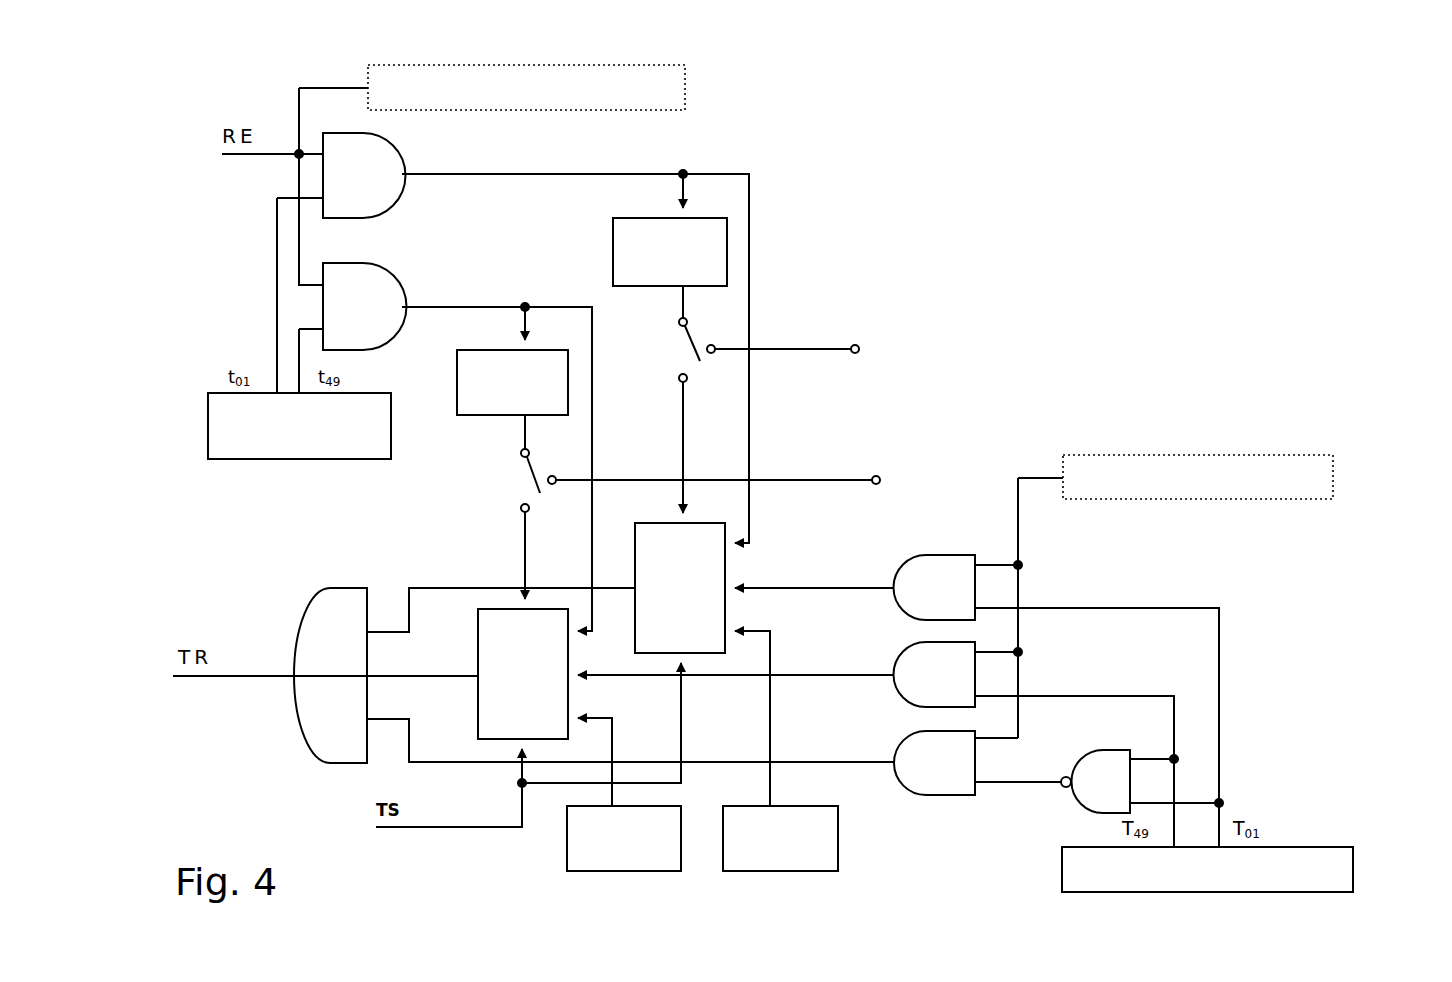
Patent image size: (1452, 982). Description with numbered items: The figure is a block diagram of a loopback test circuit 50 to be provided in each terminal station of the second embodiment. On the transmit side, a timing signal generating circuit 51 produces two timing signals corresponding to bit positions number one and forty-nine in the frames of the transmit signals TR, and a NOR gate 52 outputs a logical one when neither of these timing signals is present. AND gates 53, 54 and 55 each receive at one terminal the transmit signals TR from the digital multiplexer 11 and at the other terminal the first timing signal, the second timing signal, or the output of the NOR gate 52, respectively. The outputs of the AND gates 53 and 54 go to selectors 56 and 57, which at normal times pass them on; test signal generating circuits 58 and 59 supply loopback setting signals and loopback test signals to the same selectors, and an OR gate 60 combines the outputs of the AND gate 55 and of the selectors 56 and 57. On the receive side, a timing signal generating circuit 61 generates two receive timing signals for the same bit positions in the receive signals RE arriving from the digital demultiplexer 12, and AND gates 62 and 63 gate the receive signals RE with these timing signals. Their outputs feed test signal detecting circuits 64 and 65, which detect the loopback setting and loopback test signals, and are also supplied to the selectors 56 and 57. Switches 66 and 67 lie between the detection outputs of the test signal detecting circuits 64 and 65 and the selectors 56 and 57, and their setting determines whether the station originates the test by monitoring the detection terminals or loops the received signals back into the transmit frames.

The digital multiplexer 11 is at (1298, 455).
The digital demultiplexer 12 is at (580, 84).
The loopback test circuit 50 is at (921, 121).
The timing signal generating circuit 51 is at (1290, 846).
The NOR gate 52 is at (1108, 750).
The AND gate 53 is at (950, 554).
The AND gate 54 is at (962, 642).
The AND gate 55 is at (962, 729).
The selector 56 is at (685, 522).
The selector 57 is at (538, 608).
The test signal generating circuit 58 is at (800, 805).
The test signal generating circuit 59 is at (664, 805).
The OR gate 60 is at (350, 576).
The timing signal generating circuit 61 is at (365, 392).
The AND gate 62 is at (402, 155).
The AND gate 63 is at (388, 273).
The test signal detecting circuit 64 is at (620, 217).
The test signal detecting circuit 65 is at (462, 349).
The switch 66 is at (700, 332).
The switch 67 is at (537, 465).